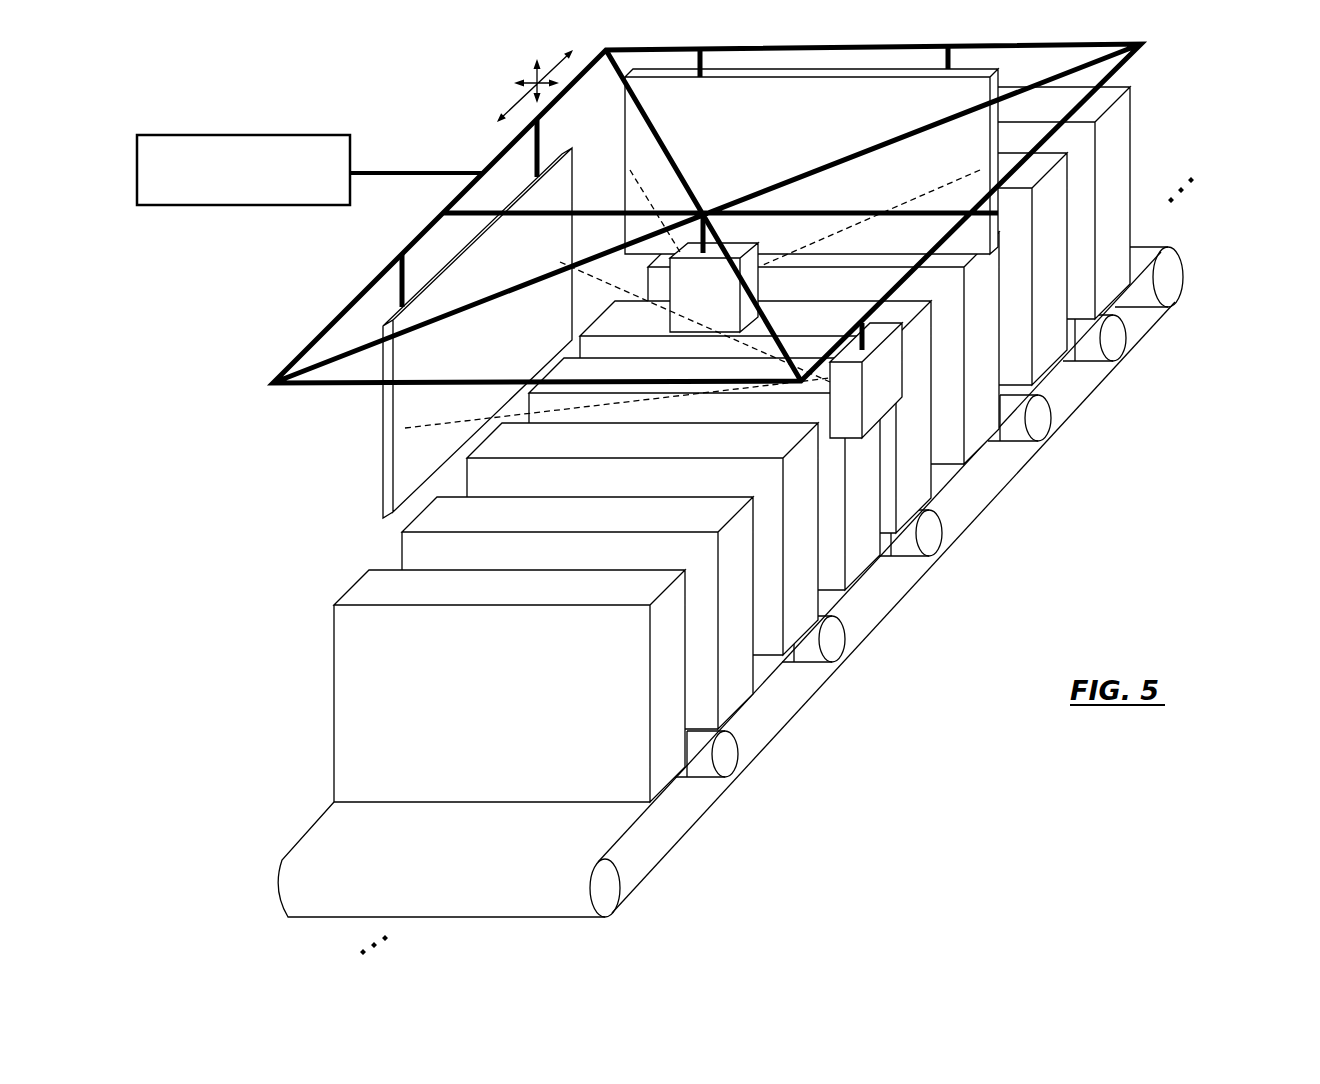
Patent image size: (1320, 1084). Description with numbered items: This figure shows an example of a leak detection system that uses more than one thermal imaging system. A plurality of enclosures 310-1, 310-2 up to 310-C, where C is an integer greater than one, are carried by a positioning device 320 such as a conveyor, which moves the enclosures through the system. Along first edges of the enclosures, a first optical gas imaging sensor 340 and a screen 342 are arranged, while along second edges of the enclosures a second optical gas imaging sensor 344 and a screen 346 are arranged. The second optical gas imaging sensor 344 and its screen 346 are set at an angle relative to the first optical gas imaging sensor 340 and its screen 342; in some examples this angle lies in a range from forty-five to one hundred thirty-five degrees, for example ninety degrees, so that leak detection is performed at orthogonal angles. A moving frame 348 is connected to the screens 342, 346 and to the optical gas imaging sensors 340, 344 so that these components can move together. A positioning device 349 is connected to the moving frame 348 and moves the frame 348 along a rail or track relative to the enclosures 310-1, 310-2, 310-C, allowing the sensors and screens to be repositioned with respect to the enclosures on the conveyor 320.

The enclosure 310-1 is at (334, 655).
The enclosure 310-2 is at (400, 548).
The enclosure 310-C is at (1132, 227).
The positioning device 320 is at (1083, 402).
The first optical gas imaging sensor 340 is at (887, 388).
The screen 342 is at (447, 262).
The second optical gas imaging sensor 344 is at (735, 250).
The screen 346 is at (848, 78).
The moving frame 348 is at (490, 167).
The positioning device 349 is at (226, 133).